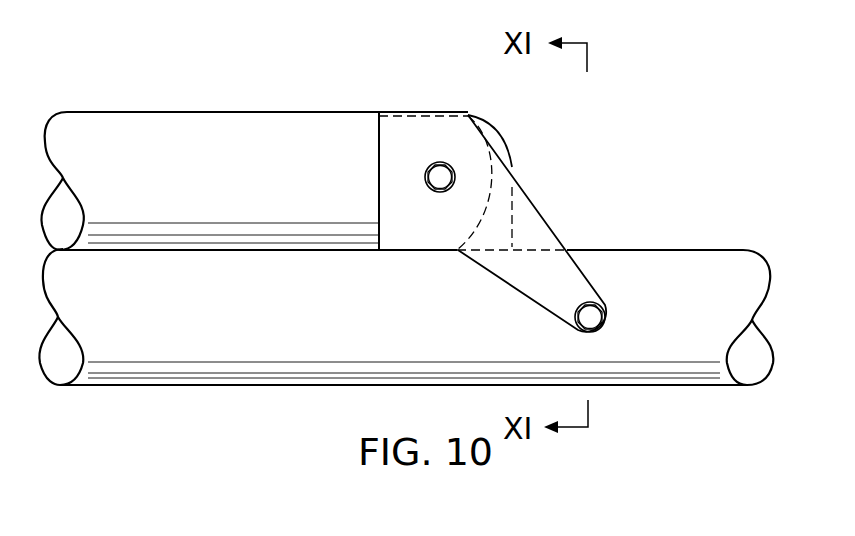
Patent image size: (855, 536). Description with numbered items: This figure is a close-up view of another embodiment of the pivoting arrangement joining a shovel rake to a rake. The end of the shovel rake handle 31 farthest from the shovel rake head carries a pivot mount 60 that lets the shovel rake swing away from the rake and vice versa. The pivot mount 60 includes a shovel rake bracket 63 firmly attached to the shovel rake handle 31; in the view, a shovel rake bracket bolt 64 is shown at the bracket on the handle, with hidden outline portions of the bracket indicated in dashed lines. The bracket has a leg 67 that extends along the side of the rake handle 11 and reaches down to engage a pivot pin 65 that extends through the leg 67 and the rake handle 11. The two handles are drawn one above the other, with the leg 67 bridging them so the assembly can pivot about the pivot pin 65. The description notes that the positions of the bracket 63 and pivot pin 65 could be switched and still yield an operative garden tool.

The rake handle 11 is at (219, 334).
The shovel rake handle 31 is at (219, 195).
The pivot mount 60 is at (386, 87).
The shovel rake bracket 63 is at (428, 112).
The shovel rake bracket bolt 64 is at (453, 163).
The pivot pin 65 is at (598, 311).
The leg of shovel rake bracket 67 is at (528, 190).